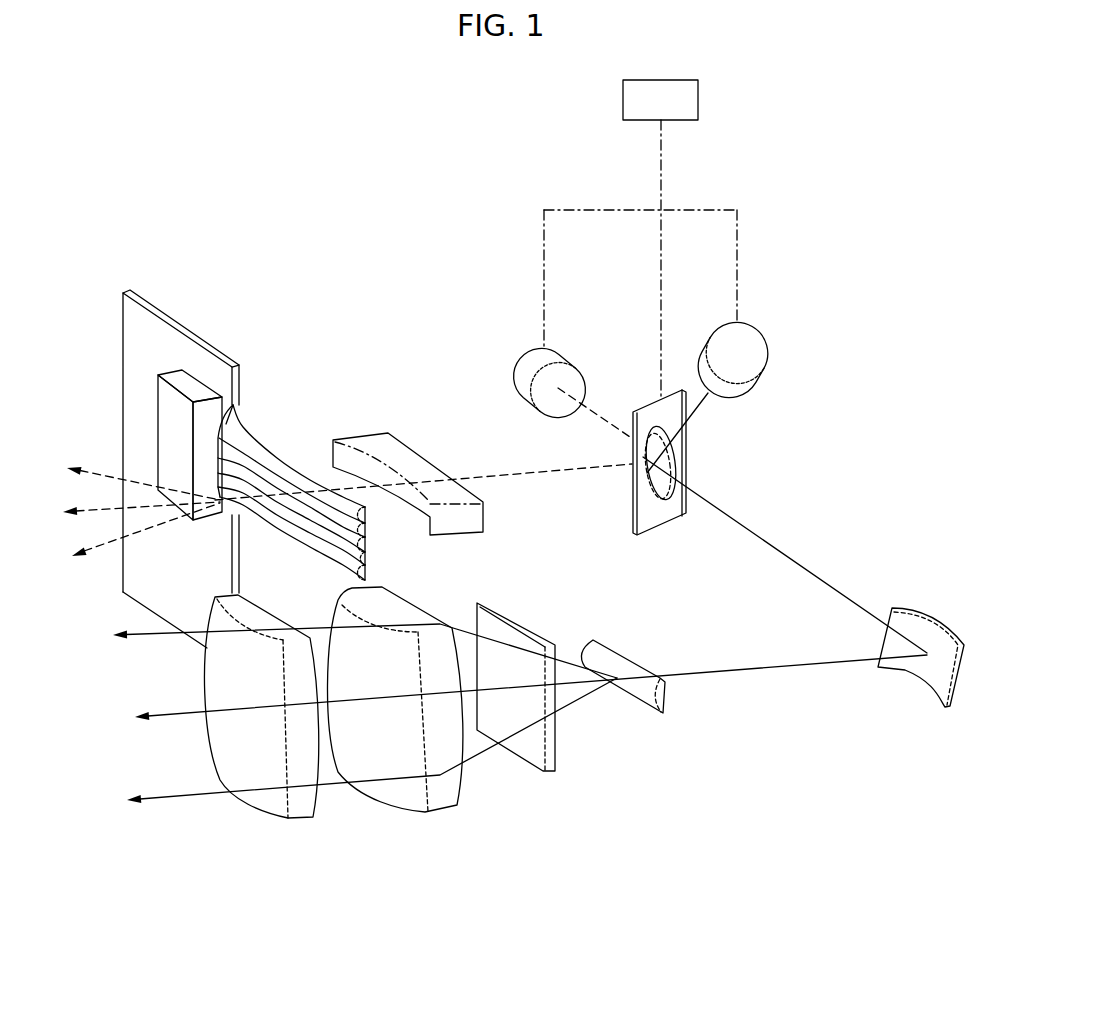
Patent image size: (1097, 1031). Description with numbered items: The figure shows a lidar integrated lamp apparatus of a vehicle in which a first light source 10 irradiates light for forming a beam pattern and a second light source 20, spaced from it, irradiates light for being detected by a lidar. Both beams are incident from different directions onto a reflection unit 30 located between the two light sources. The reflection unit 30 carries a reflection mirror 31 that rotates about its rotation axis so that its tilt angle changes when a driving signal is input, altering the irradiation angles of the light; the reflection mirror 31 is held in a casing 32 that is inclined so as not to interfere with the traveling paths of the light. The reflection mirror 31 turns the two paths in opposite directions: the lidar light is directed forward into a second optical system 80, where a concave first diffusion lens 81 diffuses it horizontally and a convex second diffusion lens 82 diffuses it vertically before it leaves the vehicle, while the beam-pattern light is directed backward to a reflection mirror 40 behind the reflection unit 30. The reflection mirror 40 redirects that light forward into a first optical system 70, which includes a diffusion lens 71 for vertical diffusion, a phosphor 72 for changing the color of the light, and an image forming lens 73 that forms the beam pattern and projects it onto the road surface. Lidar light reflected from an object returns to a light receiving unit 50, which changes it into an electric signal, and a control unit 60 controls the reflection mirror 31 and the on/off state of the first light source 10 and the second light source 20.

The first light source 10 is at (755, 333).
The second light source 20 is at (533, 355).
The reflection unit 30 is at (728, 505).
The reflection mirror 31 is at (663, 495).
The casing 32 is at (685, 465).
The reflection mirror 40 is at (932, 672).
The light receiving unit 50 is at (183, 383).
The control unit 60 is at (693, 102).
The first optical system 70 is at (434, 785).
The diffusion lens 71 is at (623, 776).
The phosphor 72 is at (523, 742).
The image forming lens 73 is at (387, 797).
The second optical system 80 is at (350, 429).
The first diffusion lens 81 is at (381, 437).
The second diffusion lens 82 is at (250, 470).